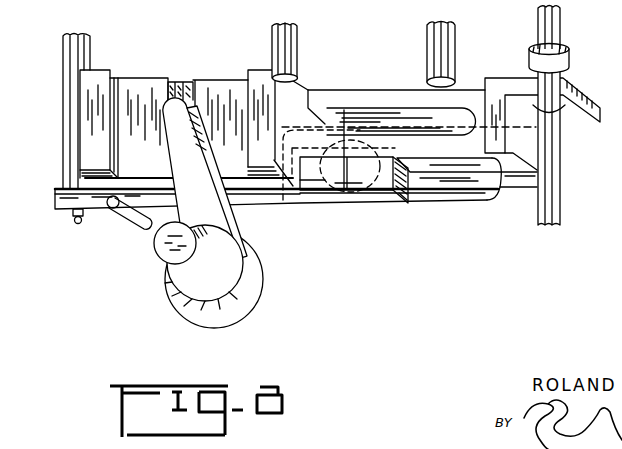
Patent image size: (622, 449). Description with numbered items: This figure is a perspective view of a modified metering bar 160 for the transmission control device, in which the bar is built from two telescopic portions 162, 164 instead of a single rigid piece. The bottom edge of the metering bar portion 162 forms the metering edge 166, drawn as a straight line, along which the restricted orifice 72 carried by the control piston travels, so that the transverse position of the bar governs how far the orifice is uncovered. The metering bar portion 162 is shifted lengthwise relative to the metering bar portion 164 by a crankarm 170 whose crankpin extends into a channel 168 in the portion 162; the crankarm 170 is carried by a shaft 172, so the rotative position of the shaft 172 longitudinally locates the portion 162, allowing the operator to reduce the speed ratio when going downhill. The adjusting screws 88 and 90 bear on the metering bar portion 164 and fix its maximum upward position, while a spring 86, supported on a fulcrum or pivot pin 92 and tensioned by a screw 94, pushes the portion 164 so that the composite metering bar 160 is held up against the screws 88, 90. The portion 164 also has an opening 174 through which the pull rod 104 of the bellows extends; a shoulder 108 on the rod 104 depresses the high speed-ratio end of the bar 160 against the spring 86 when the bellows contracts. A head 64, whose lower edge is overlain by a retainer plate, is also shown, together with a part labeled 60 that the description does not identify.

The carriage body 60 is at (483, 188).
The head 64 is at (336, 196).
The restricted orifice 72 is at (353, 180).
The spring 86 is at (97, 206).
The adjusting screw 88 is at (298, 34).
The adjusting screw 90 is at (444, 38).
The fulcrum or pivot pin 92 is at (133, 223).
The screw 94 is at (67, 65).
The pull rod 104 is at (553, 168).
The shoulder 108 is at (568, 56).
The metering bar 160 is at (233, 66).
The metering bar portion 162 is at (146, 87).
The metering bar portion 164 is at (362, 97).
The metering edge 166 is at (240, 186).
The channel 168 is at (183, 92).
The crankarm 170 is at (208, 203).
The shaft 172 is at (165, 252).
The opening 174 is at (569, 121).